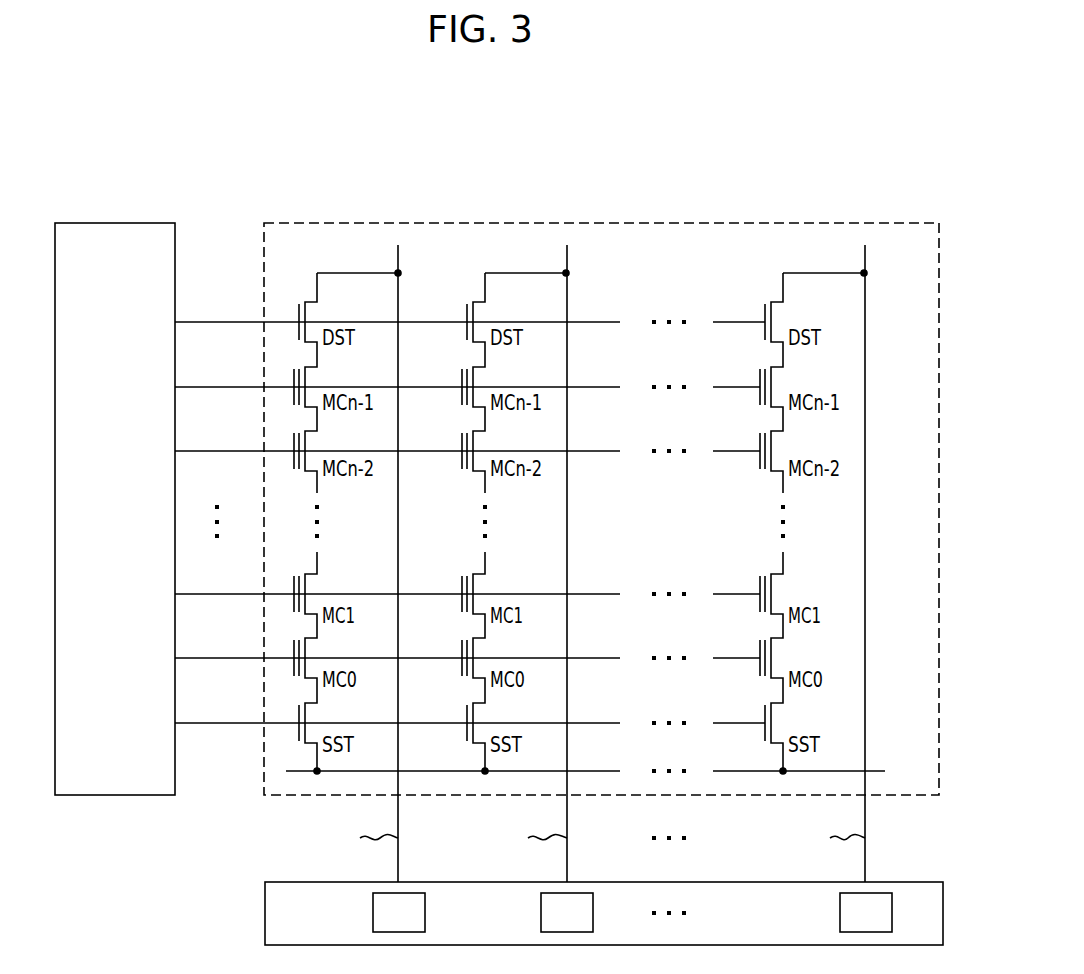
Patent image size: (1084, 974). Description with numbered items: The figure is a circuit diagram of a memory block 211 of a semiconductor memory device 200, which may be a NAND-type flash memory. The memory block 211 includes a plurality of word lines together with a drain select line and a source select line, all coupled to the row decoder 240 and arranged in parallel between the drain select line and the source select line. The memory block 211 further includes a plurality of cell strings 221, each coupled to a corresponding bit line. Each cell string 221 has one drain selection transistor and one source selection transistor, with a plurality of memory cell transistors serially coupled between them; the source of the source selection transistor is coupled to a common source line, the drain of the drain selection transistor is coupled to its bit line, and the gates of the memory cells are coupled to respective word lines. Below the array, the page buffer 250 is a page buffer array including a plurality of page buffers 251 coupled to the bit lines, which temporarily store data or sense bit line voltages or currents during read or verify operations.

The semiconductor memory device 200 is at (913, 124).
The memory block 211 is at (828, 222).
The cell string 221 is at (307, 262).
The row decoder 240 is at (115, 222).
The page buffer 250 is at (265, 913).
The page buffer 251 is at (373, 913).